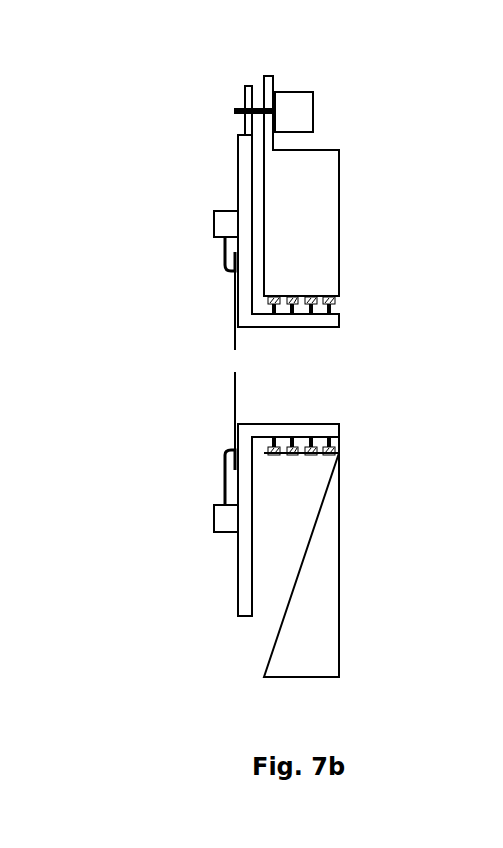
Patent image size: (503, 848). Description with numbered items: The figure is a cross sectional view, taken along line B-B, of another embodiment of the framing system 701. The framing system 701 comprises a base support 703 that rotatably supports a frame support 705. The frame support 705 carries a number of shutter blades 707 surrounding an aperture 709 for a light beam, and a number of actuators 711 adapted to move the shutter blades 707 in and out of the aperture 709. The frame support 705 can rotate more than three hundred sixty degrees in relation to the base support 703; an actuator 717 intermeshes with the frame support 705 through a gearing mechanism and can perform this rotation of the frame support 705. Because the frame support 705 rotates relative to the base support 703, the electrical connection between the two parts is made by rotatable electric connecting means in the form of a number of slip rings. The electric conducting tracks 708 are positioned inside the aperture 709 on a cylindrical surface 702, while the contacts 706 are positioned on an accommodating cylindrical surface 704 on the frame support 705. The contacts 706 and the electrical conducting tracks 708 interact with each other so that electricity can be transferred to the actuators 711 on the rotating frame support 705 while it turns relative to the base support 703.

The framing system 701 is at (218, 56).
The cylindrical surface 702 is at (370, 302).
The base support 703 is at (264, 666).
The accommodating cylindrical surface 704 is at (368, 322).
The frame support 705 is at (238, 577).
The contacts 706 is at (330, 447).
The shutter blades 707 is at (233, 402).
The electrical conducting track 708 is at (335, 455).
The aperture 709 is at (275, 363).
The actuators 711 is at (227, 227).
The actuator 717 is at (294, 110).